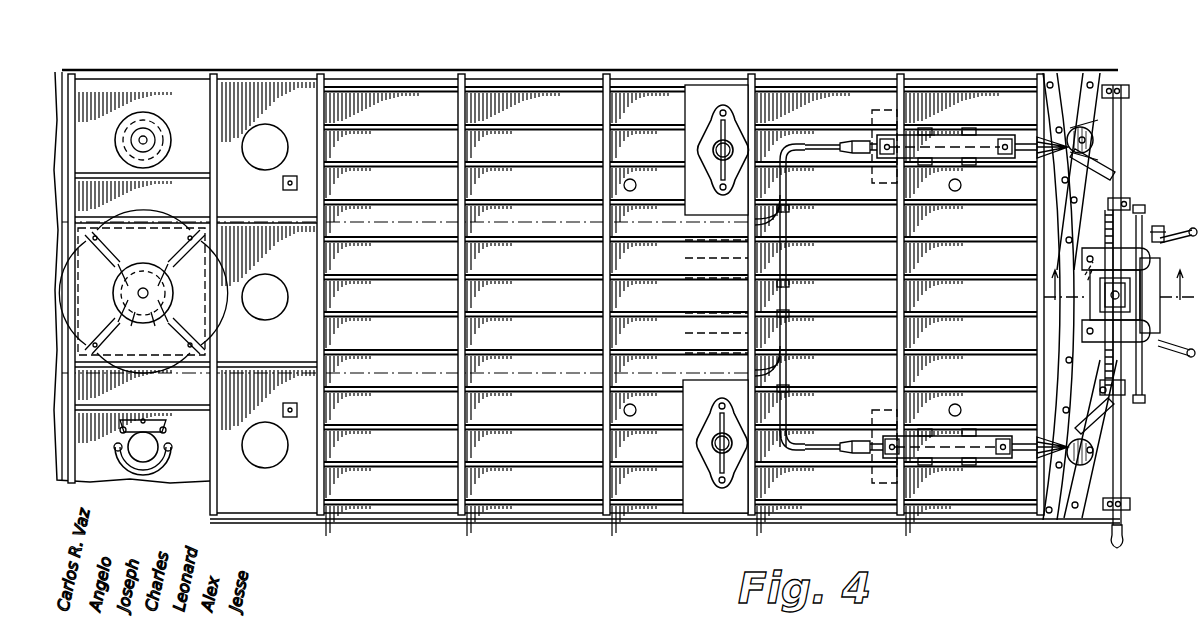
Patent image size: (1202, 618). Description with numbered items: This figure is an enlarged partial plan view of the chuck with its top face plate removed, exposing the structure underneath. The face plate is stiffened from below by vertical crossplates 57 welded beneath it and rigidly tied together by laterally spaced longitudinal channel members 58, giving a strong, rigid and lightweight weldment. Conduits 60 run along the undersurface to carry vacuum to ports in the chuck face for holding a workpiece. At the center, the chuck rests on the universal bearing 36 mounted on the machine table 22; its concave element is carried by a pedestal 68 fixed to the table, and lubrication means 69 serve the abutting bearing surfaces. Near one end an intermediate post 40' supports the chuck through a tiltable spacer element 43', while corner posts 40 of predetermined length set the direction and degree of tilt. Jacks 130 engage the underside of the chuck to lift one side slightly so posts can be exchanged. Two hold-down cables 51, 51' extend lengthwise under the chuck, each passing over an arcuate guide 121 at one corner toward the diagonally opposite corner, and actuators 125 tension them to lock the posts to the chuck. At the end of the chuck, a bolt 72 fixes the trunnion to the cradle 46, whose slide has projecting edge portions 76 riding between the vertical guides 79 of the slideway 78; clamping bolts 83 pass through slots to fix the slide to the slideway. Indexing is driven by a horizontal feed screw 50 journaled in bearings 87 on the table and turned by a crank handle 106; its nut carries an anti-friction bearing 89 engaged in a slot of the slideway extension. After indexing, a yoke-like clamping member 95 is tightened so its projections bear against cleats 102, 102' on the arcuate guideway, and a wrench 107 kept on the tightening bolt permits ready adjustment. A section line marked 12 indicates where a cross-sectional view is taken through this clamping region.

The machine table 22 is at (345, 70).
The vertical crossplates 57 is at (462, 88).
The longitudinal channel members 58 is at (417, 198).
The jacks 130 is at (727, 140).
The hold-down cable 51' is at (797, 272).
The hold-down cable 51 is at (797, 431).
The actuators 125 is at (980, 148).
The arcuate guide 121 is at (1040, 157).
The conduits 60 is at (636, 185).
The element of load sustaining spacer device 43' is at (157, 140).
The pedestal 68 is at (207, 278).
The lubrication means 69 is at (143, 288).
The universal bearing 36 is at (210, 275).
The intermediate posts 40' is at (156, 447).
The cleat 102 is at (1092, 296).
The cleat 102' is at (1063, 300).
The posts 40 is at (1110, 290).
The wrench 107 is at (1115, 183).
The slideway 78 is at (1085, 275).
The bolt 72 is at (1085, 277).
The section line 12 is at (1119, 301).
The clamping bolts 83 is at (1159, 230).
The vertical guides 79 is at (1178, 232).
The vertical edge portions 76 is at (1172, 348).
The cradle 46 is at (1120, 352).
The anti-friction bearing 89 is at (1125, 388).
The yoke-like clamping member 95 is at (1100, 437).
The feed screw 50 is at (1121, 483).
The bearings 87 is at (1130, 504).
The crank handle 106 is at (1124, 537).